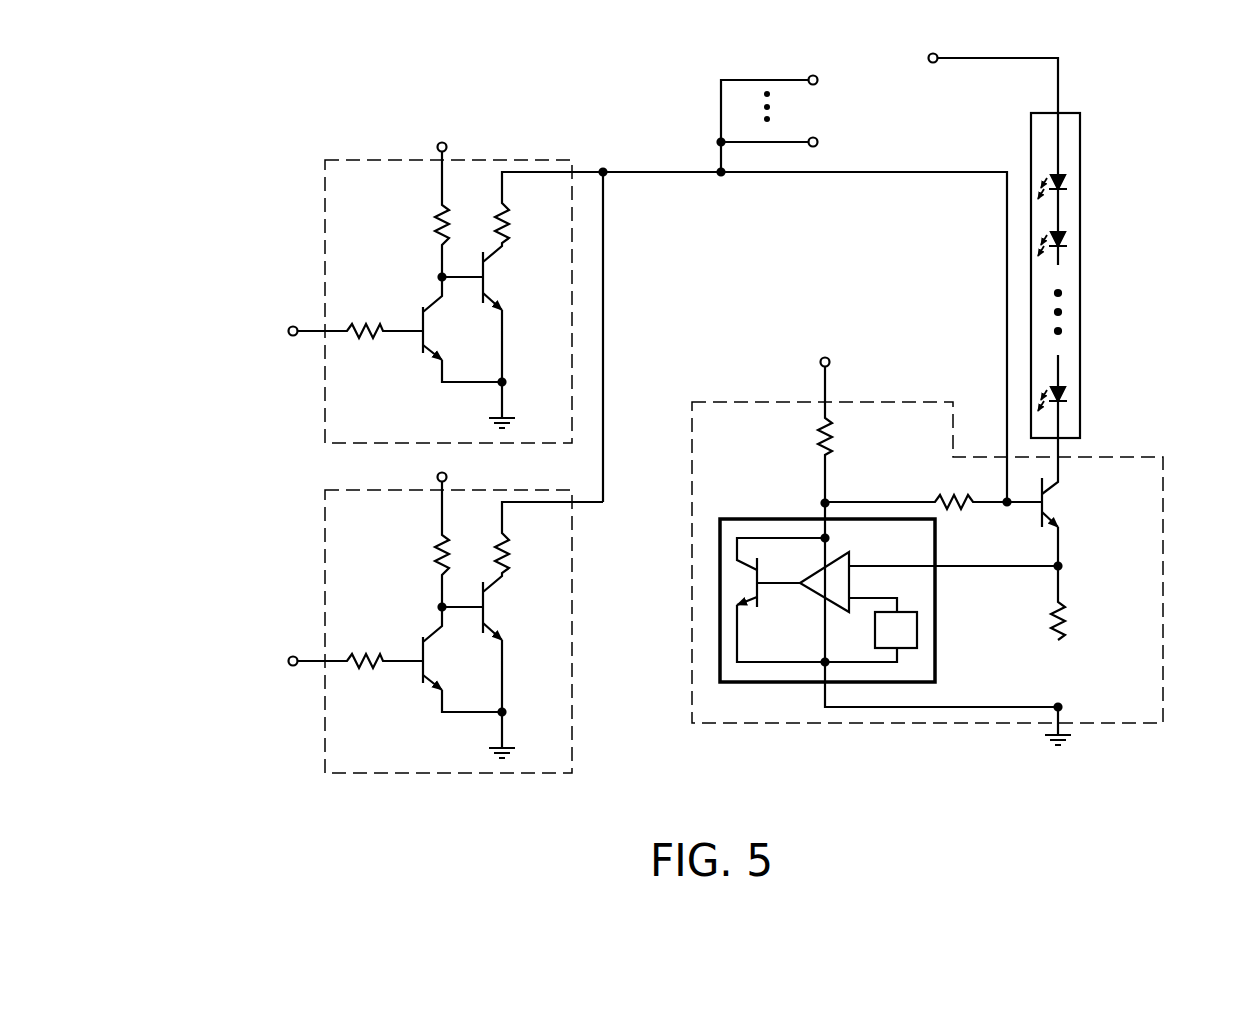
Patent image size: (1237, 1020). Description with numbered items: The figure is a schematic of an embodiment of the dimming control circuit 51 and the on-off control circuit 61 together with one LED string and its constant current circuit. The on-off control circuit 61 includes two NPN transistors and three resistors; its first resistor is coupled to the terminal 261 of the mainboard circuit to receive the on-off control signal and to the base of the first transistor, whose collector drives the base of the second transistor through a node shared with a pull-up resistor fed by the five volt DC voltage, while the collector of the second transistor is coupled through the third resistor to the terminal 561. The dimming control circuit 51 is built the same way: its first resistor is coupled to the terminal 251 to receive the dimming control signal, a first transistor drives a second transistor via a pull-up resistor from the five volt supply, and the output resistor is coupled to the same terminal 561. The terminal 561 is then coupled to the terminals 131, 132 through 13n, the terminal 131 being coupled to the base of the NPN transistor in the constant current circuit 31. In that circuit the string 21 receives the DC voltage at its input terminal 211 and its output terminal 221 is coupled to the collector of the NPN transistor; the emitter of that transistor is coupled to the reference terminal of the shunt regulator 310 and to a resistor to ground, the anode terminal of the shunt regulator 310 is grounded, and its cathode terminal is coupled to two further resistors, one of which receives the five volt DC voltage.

The dimming control circuit 51 is at (325, 222).
The terminal of the mainboard circuit 251 is at (293, 326).
The on-off control circuit 61 is at (325, 552).
The terminal of the mainboard circuit 261 is at (293, 656).
The terminal 561 is at (604, 168).
The terminal 13n is at (817, 77).
The terminal 132 is at (817, 139).
The terminal 131 is at (815, 171).
The input terminal of the string 211 is at (1060, 113).
The string 21 is at (1081, 268).
The output terminal of the string 221 is at (1062, 440).
The constant current circuit 31 is at (1164, 603).
The shunt regulator 310 is at (778, 519).